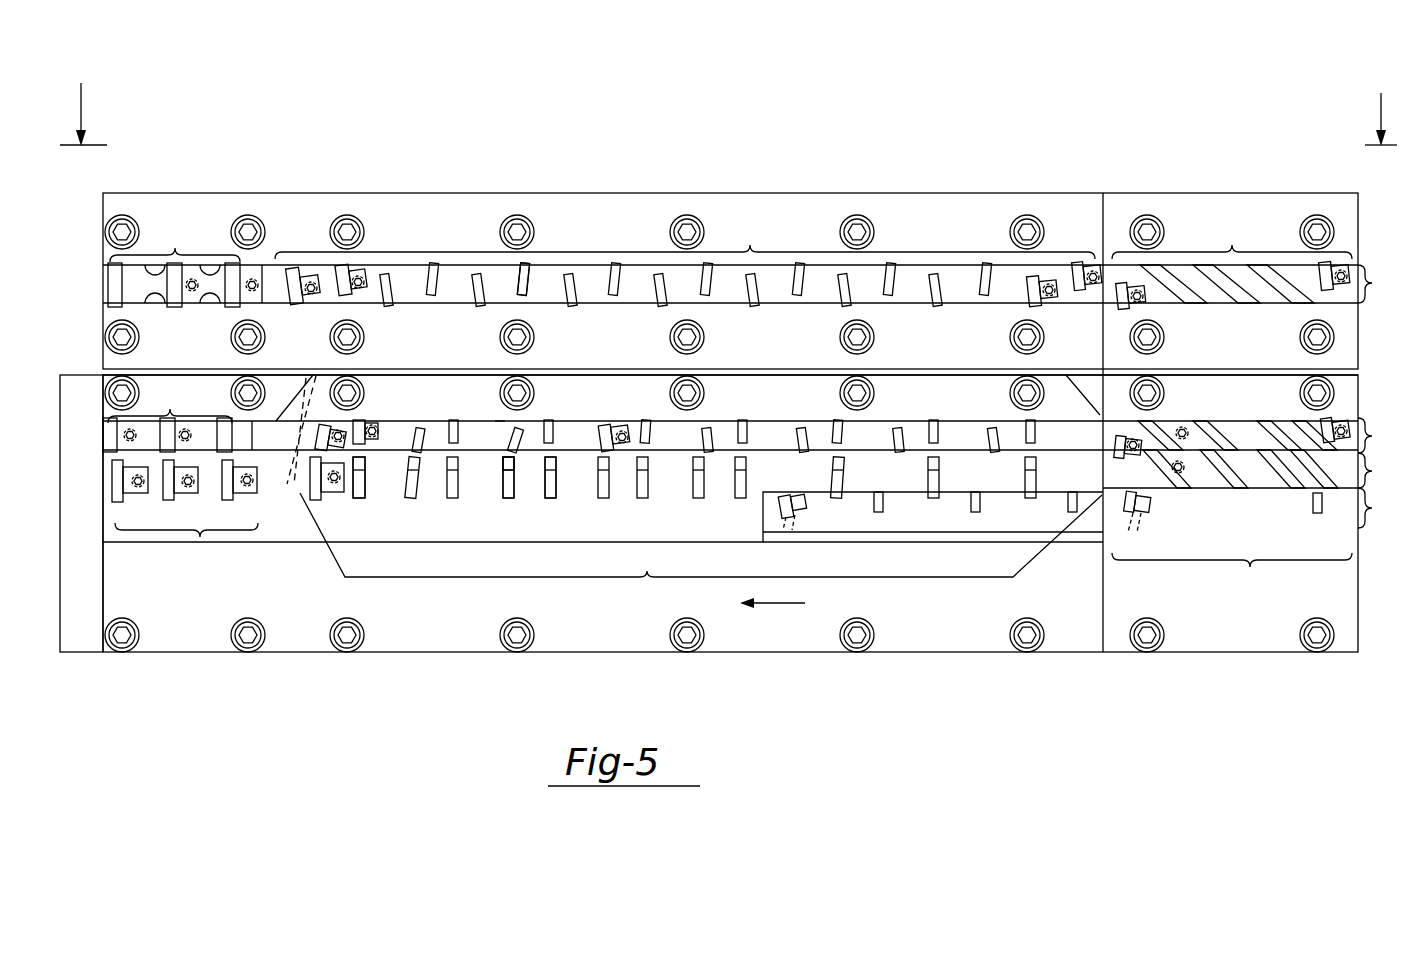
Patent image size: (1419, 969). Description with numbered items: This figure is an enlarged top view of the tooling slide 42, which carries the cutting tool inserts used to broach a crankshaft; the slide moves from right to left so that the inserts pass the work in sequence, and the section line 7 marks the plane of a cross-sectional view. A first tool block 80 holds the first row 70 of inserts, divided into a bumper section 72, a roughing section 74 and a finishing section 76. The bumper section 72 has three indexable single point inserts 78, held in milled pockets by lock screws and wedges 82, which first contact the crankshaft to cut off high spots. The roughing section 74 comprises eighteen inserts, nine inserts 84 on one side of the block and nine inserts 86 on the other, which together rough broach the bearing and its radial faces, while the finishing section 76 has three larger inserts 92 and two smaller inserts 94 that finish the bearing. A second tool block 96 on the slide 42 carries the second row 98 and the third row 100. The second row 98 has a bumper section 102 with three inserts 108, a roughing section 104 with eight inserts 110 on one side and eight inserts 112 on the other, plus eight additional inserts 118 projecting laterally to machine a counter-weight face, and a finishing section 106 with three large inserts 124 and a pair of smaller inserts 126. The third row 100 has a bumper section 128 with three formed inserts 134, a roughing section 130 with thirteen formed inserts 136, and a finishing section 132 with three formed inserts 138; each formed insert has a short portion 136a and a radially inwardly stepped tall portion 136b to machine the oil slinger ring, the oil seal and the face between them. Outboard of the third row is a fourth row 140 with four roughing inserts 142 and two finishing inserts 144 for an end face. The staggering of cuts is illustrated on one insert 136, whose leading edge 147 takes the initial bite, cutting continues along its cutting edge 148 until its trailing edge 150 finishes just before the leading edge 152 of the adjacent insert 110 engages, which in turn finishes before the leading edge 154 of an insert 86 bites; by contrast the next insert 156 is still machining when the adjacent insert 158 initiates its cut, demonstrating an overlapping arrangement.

The section line 7- 7 is at (728, 113).
The slide 42 is at (997, 659).
The first row of cutting tool inserts 70 is at (1381, 284).
The bumper section 72 is at (185, 265).
The roughing section 74 is at (685, 264).
The finishing section 76 is at (1232, 241).
The indexable single point inserts 78 is at (172, 305).
The tool block 80 is at (305, 203).
The lock screws and wedges 82 is at (192, 292).
The roughing inserts 84 is at (384, 302).
The roughing inserts 86 is at (530, 282).
The larger finishing inserts 92 is at (1190, 301).
The smaller finishing inserts 94 is at (1335, 268).
The second tool block 96 is at (430, 653).
The second row of cutting tool inserts 98 is at (1381, 437).
The third row of inserts 100 is at (1385, 472).
The bumper section 102 is at (603, 417).
The roughing section 104 is at (705, 370).
The finishing section 106 is at (1203, 384).
The bumper inserts 108 is at (168, 452).
The roughing inserts 110 is at (522, 423).
The roughing inserts 112 is at (443, 421).
The additional roughing inserts 118 is at (315, 373).
The large finishing inserts 124 is at (1242, 423).
The smaller finishing inserts 126 is at (1318, 423).
The bumper section 128 is at (200, 538).
The roughing section 130 is at (701, 555).
The finishing section 132 is at (1250, 568).
The formed bumper inserts 134 is at (197, 494).
The formed roughing inserts 136 is at (308, 500).
The short portion 136a is at (367, 467).
The radially inwardly stepped tall portion 136b is at (356, 498).
The formed finishing inserts 138 is at (1282, 477).
The fourth row 140 is at (1363, 508).
The roughing inserts 142 is at (883, 503).
The finishing inserts 144 is at (1145, 514).
The leading edge 147 is at (506, 480).
The cutting edge 148 is at (500, 480).
The trailing edge 150 is at (500, 457).
The leading edge 152 is at (500, 421).
The leading edge 154 is at (517, 290).
The adjacent formed insert 156 is at (535, 484).
The adjacent roughing insert 158 is at (550, 419).